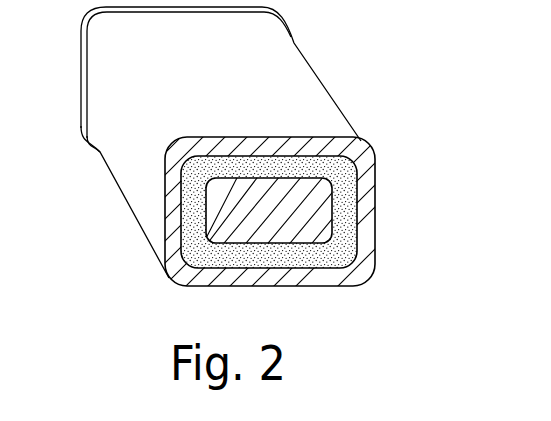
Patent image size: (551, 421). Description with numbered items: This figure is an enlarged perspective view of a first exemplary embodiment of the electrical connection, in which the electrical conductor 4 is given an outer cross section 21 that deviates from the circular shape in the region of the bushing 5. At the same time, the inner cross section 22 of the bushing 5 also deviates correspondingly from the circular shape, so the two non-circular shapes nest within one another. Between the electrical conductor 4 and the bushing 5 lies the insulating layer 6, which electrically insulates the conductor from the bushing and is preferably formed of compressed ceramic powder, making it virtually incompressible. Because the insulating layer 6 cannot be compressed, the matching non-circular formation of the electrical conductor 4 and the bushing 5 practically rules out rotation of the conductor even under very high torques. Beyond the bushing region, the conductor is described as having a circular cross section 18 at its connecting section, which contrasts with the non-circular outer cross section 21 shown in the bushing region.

The electrical conductor 4 is at (323, 210).
The bushing 5 is at (312, 137).
The insulating layer 6 is at (362, 145).
The circular cross section 18 is at (374, 190).
The outer cross section 21 is at (263, 222).
The inner cross section 22 is at (348, 241).